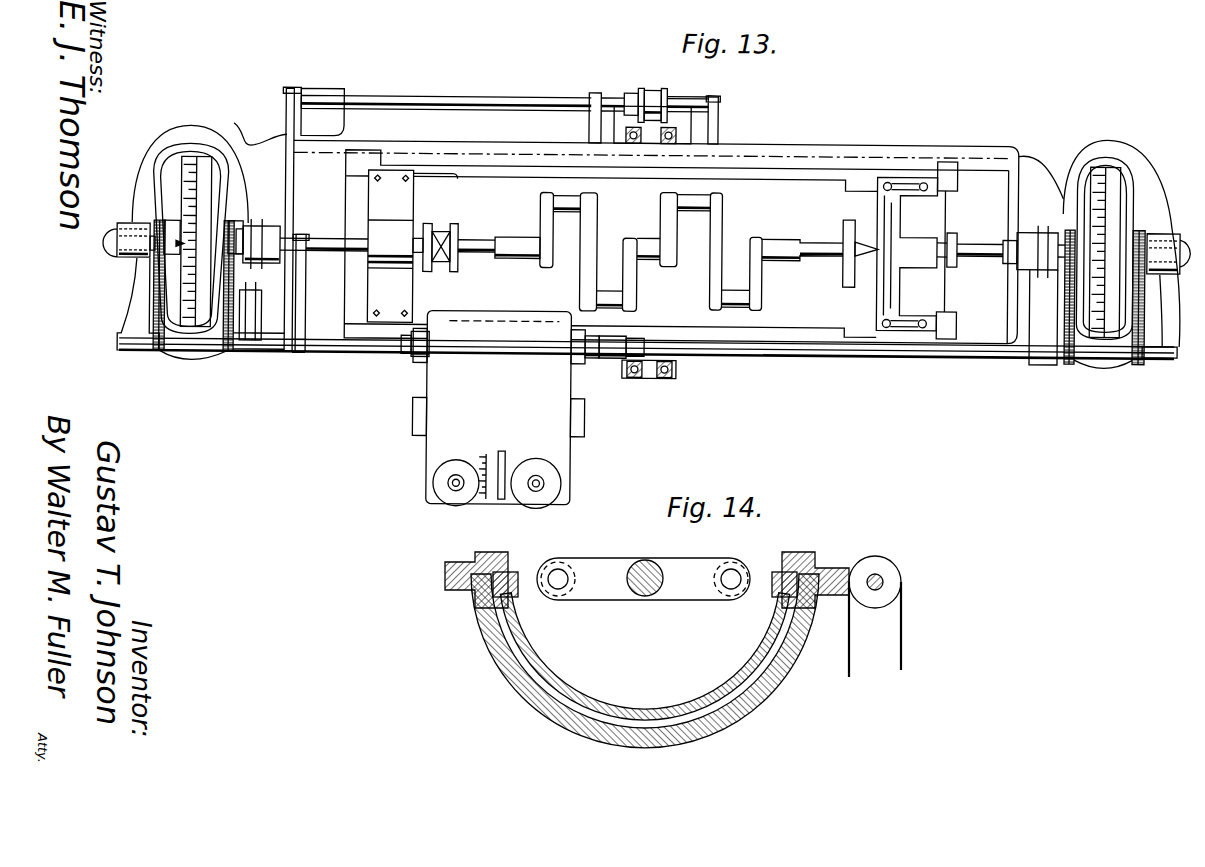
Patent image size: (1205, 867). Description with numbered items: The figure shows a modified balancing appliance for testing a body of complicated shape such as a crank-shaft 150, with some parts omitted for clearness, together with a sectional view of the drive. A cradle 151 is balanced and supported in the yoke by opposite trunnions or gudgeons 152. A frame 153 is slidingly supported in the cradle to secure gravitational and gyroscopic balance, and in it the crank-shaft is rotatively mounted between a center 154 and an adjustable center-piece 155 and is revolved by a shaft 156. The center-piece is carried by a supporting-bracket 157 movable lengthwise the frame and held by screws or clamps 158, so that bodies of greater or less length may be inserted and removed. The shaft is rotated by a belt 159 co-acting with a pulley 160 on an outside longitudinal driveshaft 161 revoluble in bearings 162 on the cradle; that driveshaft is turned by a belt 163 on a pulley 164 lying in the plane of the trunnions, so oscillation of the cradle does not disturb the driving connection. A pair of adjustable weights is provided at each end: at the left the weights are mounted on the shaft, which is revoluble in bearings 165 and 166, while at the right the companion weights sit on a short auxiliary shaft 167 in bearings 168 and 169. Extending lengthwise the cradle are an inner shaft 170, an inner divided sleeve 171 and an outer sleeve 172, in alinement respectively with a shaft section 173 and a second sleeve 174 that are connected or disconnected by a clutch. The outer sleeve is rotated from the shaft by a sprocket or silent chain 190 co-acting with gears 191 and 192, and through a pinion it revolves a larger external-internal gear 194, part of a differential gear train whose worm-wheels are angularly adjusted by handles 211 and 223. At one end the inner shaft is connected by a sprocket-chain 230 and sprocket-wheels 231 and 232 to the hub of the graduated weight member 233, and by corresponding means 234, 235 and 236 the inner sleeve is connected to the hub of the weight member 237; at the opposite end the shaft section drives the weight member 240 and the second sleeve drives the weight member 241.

In FIG. 13, the crankshaft 150 is at (720, 240).
In FIG. 14, the crankshaft 150 is at (681, 584).
In FIG. 13, the cradle 151 is at (811, 146).
In FIG. 14, the cradle 151 is at (474, 562).
In FIG. 13, the trunnions or gudgeons 152 is at (633, 145).
In FIG. 13, the frame 153 is at (455, 179).
In FIG. 14, the frame 153 is at (537, 650).
In FIG. 13, the center 154 is at (450, 236).
In FIG. 13, the adjustable center-piece 155 is at (852, 268).
In FIG. 13, the shaft 156 is at (320, 242).
In FIG. 13, the supporting-bracket 157 is at (903, 224).
In FIG. 13, the screws or clamps 158 is at (923, 180).
In FIG. 13, the belt 159 is at (288, 176).
In FIG. 13, the pulley 160 is at (284, 106).
In FIG. 13, the longitudinal driveshaft 161 is at (451, 98).
In FIG. 14, the longitudinal driveshaft 161 is at (884, 580).
In FIG. 13, the bearings 162 is at (322, 96).
In FIG. 13, the belt 163 is at (651, 92).
In FIG. 14, the belt 163 is at (900, 663).
In FIG. 13, the pulley 164 is at (668, 94).
In FIG. 14, the pulley 164 is at (893, 587).
In FIG. 13, the bearing 165 is at (263, 233).
In FIG. 13, the bearing 166 is at (130, 251).
In FIG. 13, the auxiliary or supplemental shaft 167 is at (1004, 252).
In FIG. 13, the bearing 168 is at (1029, 232).
In FIG. 13, the bearing 169 is at (1167, 235).
In FIG. 13, the inner shaft 170 is at (192, 366).
In FIG. 13, the inner divided sleeve 171 is at (272, 349).
In FIG. 13, the outer sleeve 172 is at (350, 348).
In FIG. 13, the shaft section 173 is at (1115, 358).
In FIG. 13, the second sleeve 174 is at (906, 350).
In FIG. 13, the sprocket or silent chain 190 is at (303, 291).
In FIG. 13, the gear 191 is at (302, 252).
In FIG. 13, the gear 192 is at (294, 354).
In FIG. 13, the gear 194 is at (435, 415).
In FIG. 13, the handle 211 is at (450, 481).
In FIG. 13, the handle 223 is at (550, 483).
In FIG. 13, the sprocket-chain or silent-chain 230 is at (153, 307).
In FIG. 13, the sprocket-wheel 231 is at (160, 356).
In FIG. 13, the sprocket-wheel 232 is at (158, 230).
In FIG. 13, the graduated weight member 233 is at (180, 168).
In FIG. 13, the connecting means 234 is at (262, 300).
In FIG. 13, the knurled wheel 235 is at (228, 358).
In FIG. 13, the connecting means 236 is at (246, 228).
In FIG. 13, the weight member 237 is at (212, 172).
In FIG. 13, the weight member 240 is at (1122, 194).
In FIG. 13, the weight member 241 is at (1080, 186).